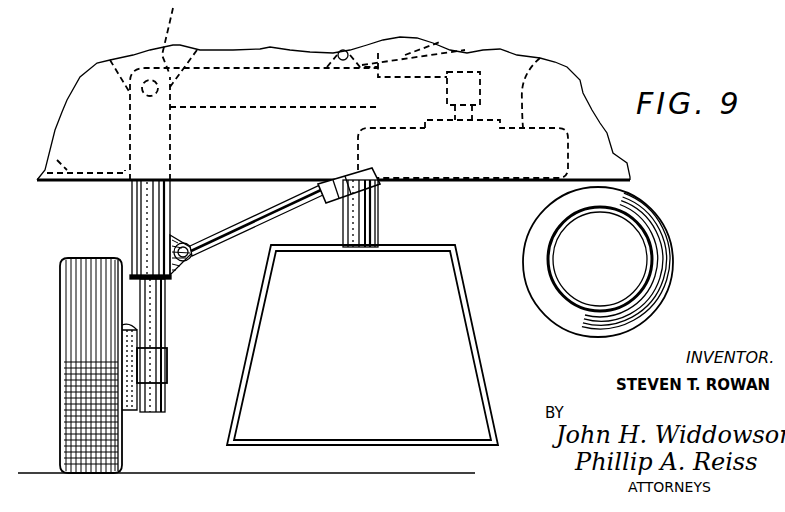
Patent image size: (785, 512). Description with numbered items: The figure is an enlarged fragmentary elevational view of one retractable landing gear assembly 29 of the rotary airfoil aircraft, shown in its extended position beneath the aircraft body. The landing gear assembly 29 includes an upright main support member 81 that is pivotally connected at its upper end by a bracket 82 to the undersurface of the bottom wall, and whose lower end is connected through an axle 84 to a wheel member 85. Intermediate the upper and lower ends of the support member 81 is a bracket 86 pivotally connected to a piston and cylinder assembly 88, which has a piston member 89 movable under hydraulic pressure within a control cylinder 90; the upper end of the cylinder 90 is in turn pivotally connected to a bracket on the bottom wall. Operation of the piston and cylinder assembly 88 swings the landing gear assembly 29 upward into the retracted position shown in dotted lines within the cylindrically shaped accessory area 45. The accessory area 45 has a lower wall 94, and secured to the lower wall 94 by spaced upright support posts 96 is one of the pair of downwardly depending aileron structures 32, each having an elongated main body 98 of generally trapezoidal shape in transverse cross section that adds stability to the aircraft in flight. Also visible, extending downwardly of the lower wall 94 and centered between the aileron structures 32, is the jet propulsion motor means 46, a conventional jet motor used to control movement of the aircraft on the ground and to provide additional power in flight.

The retractable landing gear assembly 29 is at (86, 222).
The aileron structure 32 is at (522, 188).
The accessory area 45 is at (510, 70).
The jet propulsion motor means 46 is at (645, 213).
The upright main support member 81 is at (170, 210).
The bracket 82 is at (169, 37).
The axle 84 is at (137, 385).
The wheel member 85 is at (73, 357).
The bracket 86 is at (183, 262).
The piston and cylinder assembly 88 is at (432, 37).
The piston member 89 is at (303, 200).
The control cylinder 90 is at (320, 186).
The lower wall 94 is at (57, 160).
The upright support post 96 is at (368, 228).
The elongated main body 98 is at (484, 356).